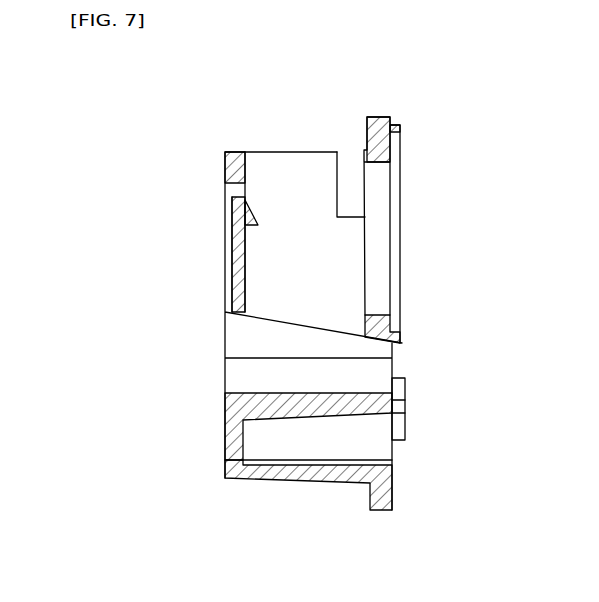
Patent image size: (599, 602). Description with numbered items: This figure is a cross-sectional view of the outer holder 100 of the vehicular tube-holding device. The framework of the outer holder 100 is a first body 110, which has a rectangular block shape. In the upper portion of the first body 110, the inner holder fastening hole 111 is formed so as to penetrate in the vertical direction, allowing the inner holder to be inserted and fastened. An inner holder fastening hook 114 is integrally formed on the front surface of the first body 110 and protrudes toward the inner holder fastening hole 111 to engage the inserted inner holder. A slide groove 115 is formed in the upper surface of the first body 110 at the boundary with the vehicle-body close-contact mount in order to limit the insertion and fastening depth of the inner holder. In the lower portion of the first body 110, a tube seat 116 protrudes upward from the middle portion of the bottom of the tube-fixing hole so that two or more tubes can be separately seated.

The outer holder 100 is at (188, 432).
The first body 110 is at (220, 494).
The inner holder fastening hole 111 is at (302, 168).
The inner holder fastening hook 114 is at (254, 228).
The slide groove 115 is at (355, 190).
The tube seat 116 is at (278, 398).